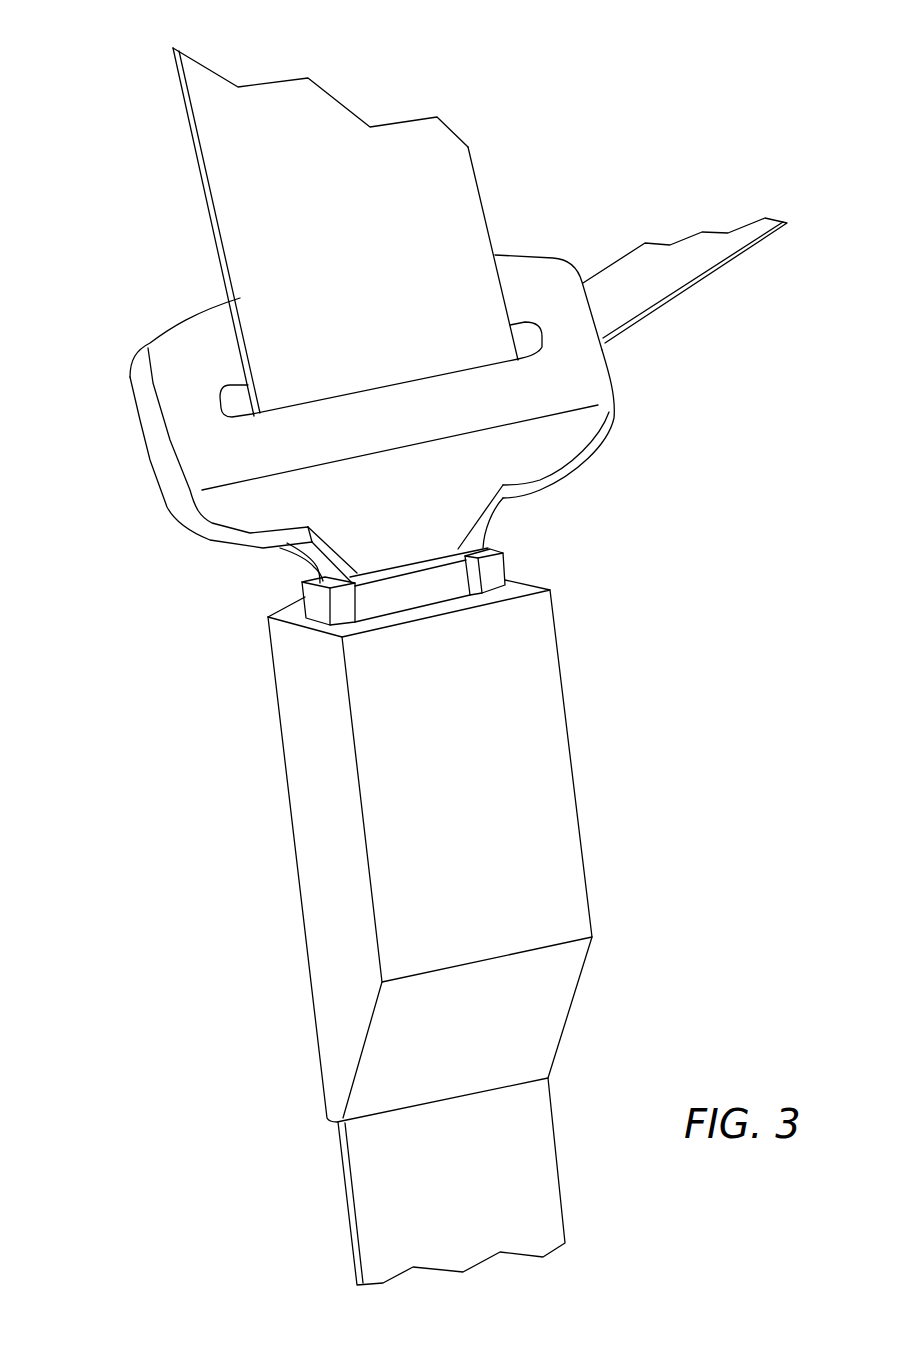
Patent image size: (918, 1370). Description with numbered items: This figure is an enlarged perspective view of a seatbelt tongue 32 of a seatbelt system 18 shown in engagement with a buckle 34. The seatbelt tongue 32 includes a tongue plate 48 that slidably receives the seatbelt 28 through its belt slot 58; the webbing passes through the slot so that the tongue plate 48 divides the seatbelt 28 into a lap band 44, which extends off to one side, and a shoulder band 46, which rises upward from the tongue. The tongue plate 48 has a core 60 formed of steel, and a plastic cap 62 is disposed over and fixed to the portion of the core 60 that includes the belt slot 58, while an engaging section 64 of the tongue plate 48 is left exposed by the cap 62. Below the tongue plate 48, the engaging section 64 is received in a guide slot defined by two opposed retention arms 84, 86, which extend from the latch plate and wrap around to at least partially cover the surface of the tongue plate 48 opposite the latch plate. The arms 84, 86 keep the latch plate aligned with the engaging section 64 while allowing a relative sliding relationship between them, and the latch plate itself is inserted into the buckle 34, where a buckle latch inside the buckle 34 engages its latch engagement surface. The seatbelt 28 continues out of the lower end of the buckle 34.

The seatbelt system 18 is at (650, 108).
The seatbelt 28 is at (192, 156).
The shoulder band 46 is at (490, 221).
The lap band 44 is at (698, 285).
The seatbelt tongue 32 is at (138, 352).
The belt slot 58 is at (221, 406).
The tongue plate 48 is at (166, 508).
The plastic cap 62 is at (617, 428).
The core 60 is at (494, 522).
The engaging section 64 is at (428, 592).
The retention arm 84 is at (298, 594).
The retention arm 86 is at (506, 566).
The buckle 34 is at (590, 851).